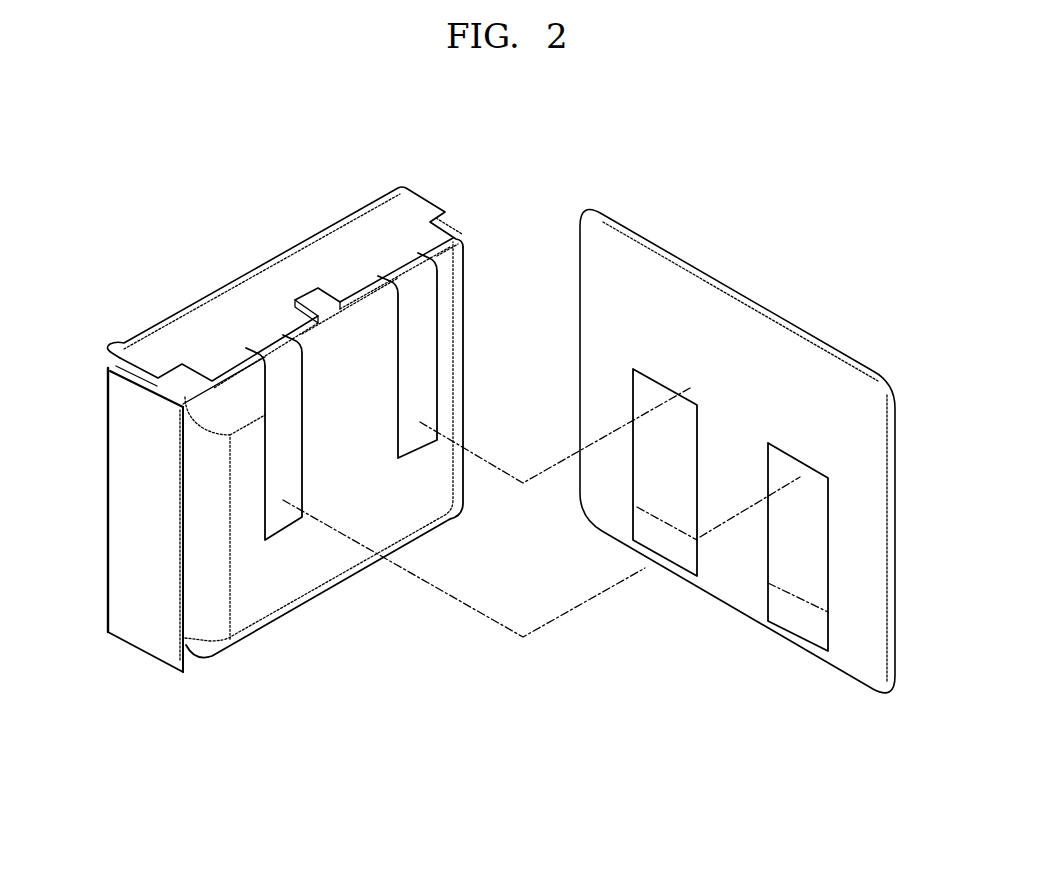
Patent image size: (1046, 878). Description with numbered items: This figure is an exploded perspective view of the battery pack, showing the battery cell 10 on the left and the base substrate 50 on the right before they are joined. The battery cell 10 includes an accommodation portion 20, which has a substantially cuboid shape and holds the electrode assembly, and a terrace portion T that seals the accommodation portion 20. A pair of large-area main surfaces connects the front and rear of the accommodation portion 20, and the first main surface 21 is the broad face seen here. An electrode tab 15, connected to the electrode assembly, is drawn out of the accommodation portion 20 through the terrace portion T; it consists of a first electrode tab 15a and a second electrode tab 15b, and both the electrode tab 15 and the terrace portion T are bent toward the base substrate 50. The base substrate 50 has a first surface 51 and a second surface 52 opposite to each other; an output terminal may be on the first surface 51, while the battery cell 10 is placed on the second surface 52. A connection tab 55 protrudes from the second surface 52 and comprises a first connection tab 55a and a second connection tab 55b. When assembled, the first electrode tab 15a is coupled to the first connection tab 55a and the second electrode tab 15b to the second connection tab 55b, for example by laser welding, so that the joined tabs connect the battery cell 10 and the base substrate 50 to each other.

The battery cell 10 is at (137, 268).
The electrode tab 15 is at (276, 166).
The first electrode tab 15a is at (277, 360).
The second electrode tab 15b is at (405, 285).
The terrace portion T is at (378, 216).
The accommodation portion 20 is at (209, 652).
The first main surface 21 is at (317, 563).
The base substrate 50 is at (807, 252).
The first surface 51 is at (898, 660).
The second surface 52 is at (866, 668).
The connection tab 55 is at (733, 712).
The first connection tab 55a is at (797, 583).
The second connection tab 55b is at (667, 508).